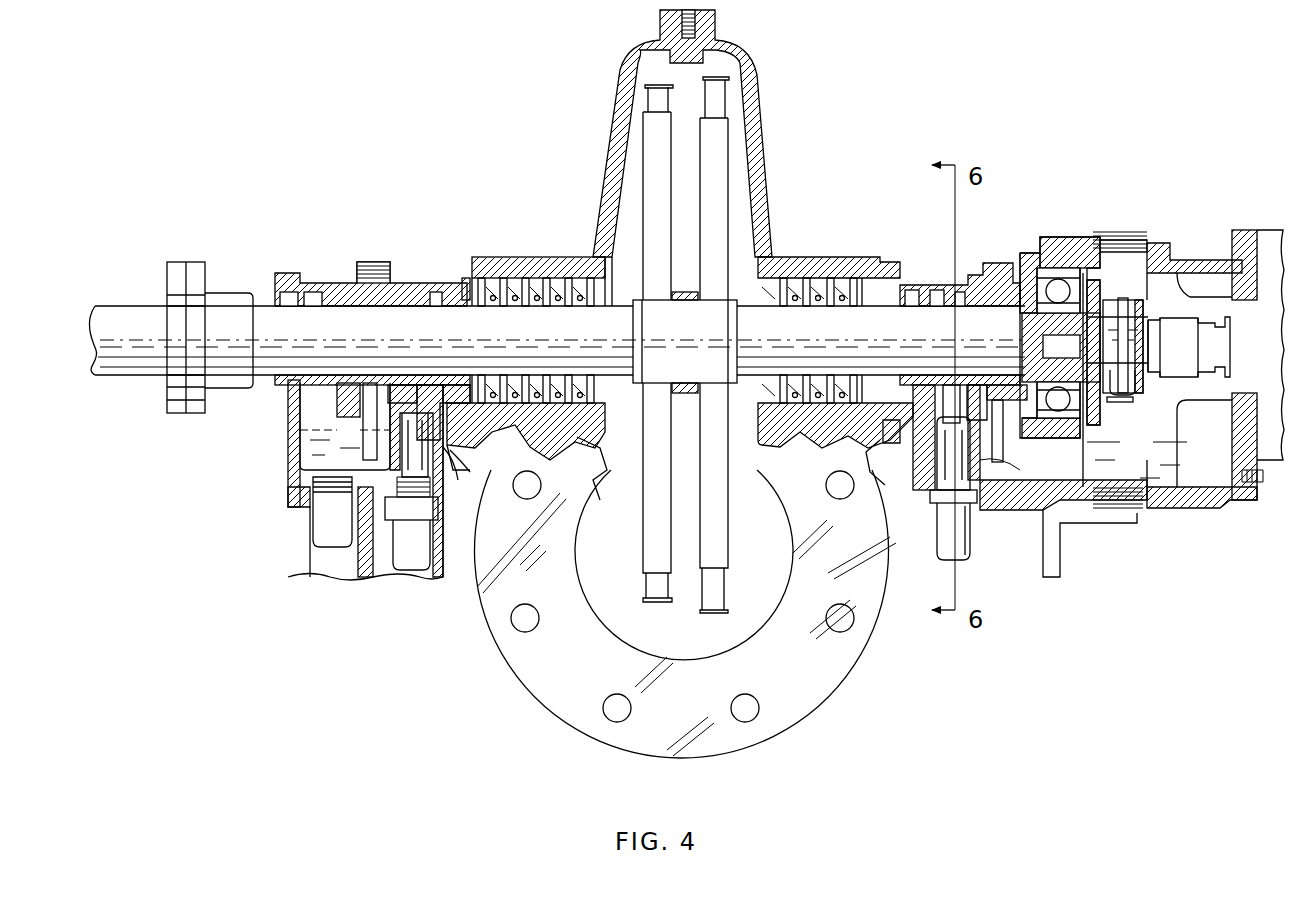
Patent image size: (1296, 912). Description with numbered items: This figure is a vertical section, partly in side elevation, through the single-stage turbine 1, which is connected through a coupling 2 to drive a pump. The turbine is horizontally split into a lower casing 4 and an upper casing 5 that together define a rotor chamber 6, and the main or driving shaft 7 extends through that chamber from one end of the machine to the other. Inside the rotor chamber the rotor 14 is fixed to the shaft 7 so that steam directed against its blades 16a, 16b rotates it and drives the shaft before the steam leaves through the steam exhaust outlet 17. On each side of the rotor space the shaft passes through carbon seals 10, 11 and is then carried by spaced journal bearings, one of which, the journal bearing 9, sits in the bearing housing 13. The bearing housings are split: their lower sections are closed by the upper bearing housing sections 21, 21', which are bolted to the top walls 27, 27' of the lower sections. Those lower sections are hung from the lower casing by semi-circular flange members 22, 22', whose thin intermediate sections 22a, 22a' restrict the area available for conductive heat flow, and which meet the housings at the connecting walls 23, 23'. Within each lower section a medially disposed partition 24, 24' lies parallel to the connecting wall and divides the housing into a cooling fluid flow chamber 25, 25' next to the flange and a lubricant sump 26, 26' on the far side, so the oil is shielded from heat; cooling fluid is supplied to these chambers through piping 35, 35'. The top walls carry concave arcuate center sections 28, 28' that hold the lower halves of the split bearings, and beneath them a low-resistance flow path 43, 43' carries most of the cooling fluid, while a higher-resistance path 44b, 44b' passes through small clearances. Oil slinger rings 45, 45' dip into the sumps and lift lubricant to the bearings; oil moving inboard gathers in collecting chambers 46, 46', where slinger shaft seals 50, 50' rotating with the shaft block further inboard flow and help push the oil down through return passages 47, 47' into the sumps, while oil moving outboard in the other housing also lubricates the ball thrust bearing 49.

The single-stage turbine 1 is at (768, 232).
The coupling 2 is at (135, 315).
The lower casing 4 is at (581, 455).
The upper casing 5 is at (578, 268).
The rotor chamber 6 is at (636, 262).
The main or driving shaft 7 is at (820, 349).
The journal bearing 9 is at (425, 296).
The carbon seal 10 is at (812, 290).
The carbon seal 11 is at (527, 283).
The bearing housing 13 is at (285, 449).
The rotor 14 is at (648, 518).
The blade 16a is at (655, 585).
The blade 16b is at (715, 590).
The steam exhaust outlet 17 is at (737, 640).
The upper bearing housing section 21 is at (1082, 317).
The upper bearing housing section 21' is at (371, 266).
The semi-circular flange member 22 is at (930, 457).
The semi-circular flange member 22' is at (485, 481).
The thin intermediate section 22a is at (875, 438).
The thin intermediate section 22a' is at (514, 448).
The connecting wall 23 is at (940, 512).
The connecting wall 23' is at (436, 511).
The medially disposed partition 24 is at (1063, 508).
The medially disposed partition 24' is at (345, 434).
The cooling fluid flow chamber 25 is at (991, 432).
The cooling fluid flow chamber 25' is at (390, 457).
The lubricant sump 26 is at (1183, 369).
The lubricant sump 26' is at (345, 426).
The top wall 27 is at (835, 434).
The top wall 27' is at (526, 431).
The concave arcuate center section 28 is at (930, 413).
The concave arcuate center section 28' is at (441, 383).
The piping 35 is at (983, 545).
The piping 35' is at (385, 550).
The flow path 43 is at (930, 407).
The flow path 43' is at (482, 426).
The flow path 44b is at (1010, 500).
The passage 44b' is at (480, 470).
The oil slinger ring 45 is at (1017, 440).
The oil slinger ring 45' is at (347, 428).
The collecting chamber 46 is at (941, 257).
The collecting chamber 46' is at (438, 249).
The return passage 47 is at (963, 373).
The return passage 47' is at (372, 364).
The ball thrust bearing 49 is at (1073, 268).
The slinger shaft seal 50 is at (943, 265).
The slinger shaft seal 50' is at (446, 267).